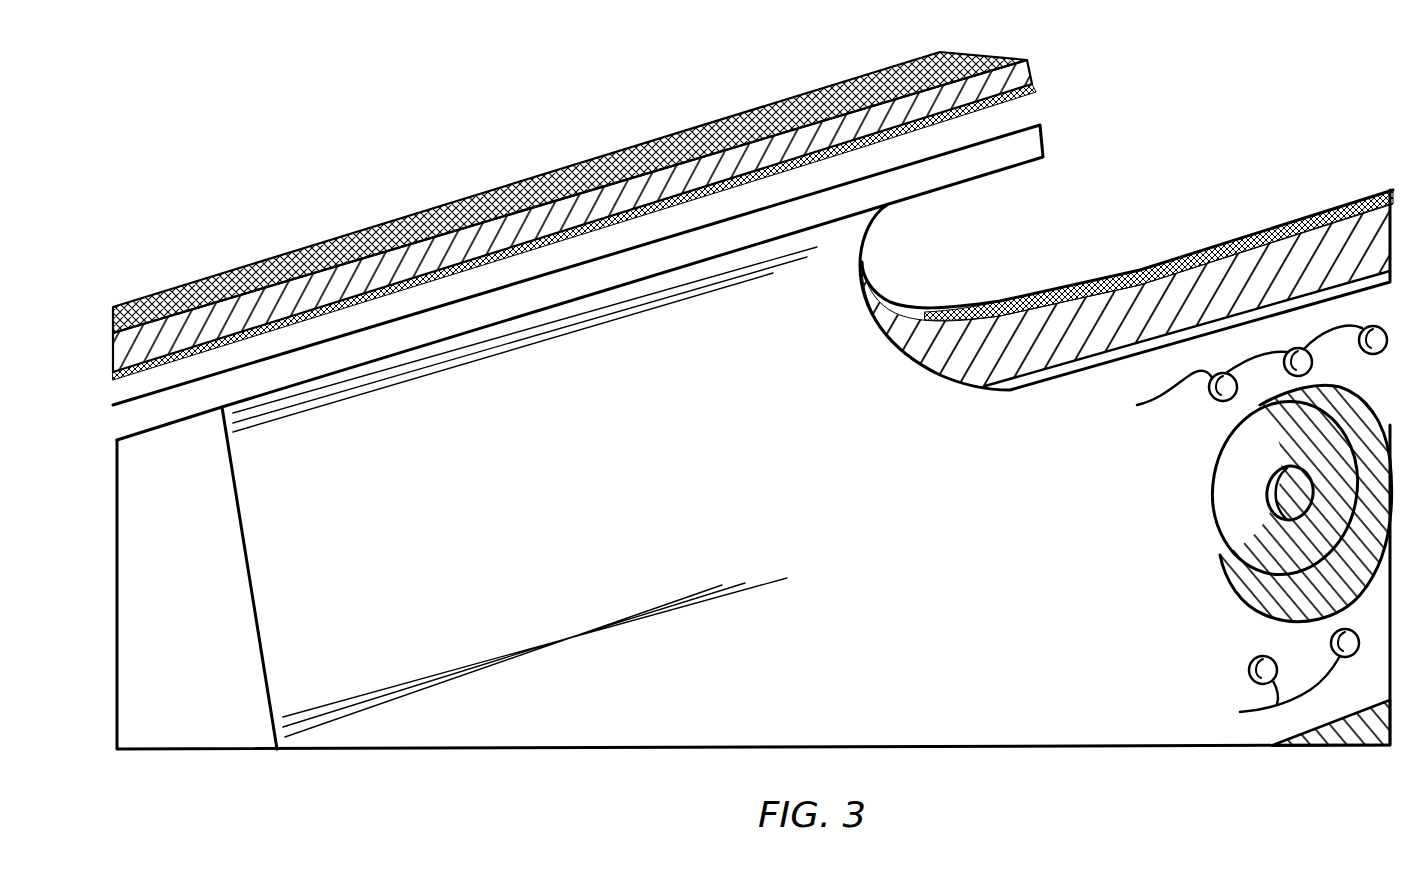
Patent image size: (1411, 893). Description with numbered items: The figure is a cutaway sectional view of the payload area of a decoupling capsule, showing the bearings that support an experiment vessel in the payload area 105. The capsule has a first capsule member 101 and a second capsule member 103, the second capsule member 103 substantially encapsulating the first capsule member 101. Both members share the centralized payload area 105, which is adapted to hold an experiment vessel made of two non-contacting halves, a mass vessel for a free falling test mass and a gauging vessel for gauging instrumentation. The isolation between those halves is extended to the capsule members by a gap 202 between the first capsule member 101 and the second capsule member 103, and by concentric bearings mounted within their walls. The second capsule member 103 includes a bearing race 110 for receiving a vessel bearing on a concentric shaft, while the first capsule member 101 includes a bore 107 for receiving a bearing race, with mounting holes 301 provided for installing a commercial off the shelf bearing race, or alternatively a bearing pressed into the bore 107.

The first capsule member 101 is at (1007, 153).
The second capsule member 103 is at (767, 110).
The payload area 105 is at (753, 498).
The bore 107 is at (1240, 590).
The bearing race 110 is at (1267, 493).
The gap 202 is at (1013, 107).
The mounting holes 301 is at (1245, 525).